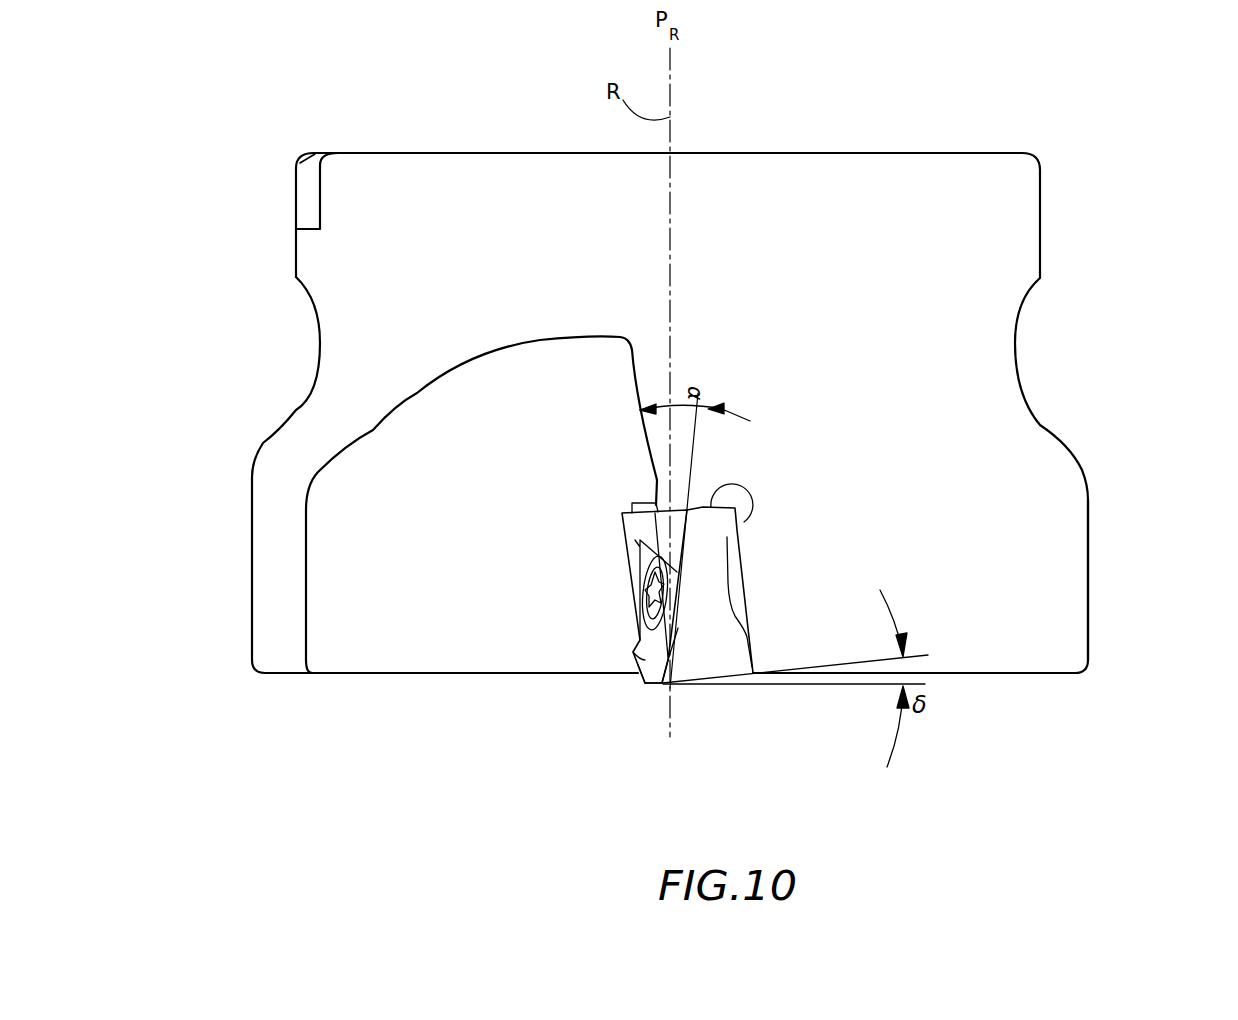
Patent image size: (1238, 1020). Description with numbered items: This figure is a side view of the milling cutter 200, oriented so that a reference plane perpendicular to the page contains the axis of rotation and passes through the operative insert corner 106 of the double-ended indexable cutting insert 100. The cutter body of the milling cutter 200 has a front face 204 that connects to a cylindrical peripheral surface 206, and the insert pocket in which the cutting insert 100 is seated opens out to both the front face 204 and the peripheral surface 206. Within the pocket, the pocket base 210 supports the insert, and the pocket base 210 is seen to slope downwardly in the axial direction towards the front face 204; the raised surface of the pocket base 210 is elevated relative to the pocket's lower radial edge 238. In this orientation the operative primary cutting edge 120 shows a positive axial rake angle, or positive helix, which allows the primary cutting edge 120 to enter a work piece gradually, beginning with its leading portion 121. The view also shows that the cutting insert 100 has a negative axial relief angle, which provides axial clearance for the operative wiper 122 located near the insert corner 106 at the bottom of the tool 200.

The cutting insert 100 is at (720, 516).
The insert corner 106 is at (662, 684).
The primary cutting edge 120 is at (680, 630).
The leading portion 121 is at (678, 630).
The wiper 122 is at (641, 684).
The milling cutter 200 is at (256, 212).
The front face 204 is at (411, 674).
The peripheral surface 206 is at (1025, 577).
The pocket base 210 is at (733, 614).
The lower radial edge 238 is at (750, 585).